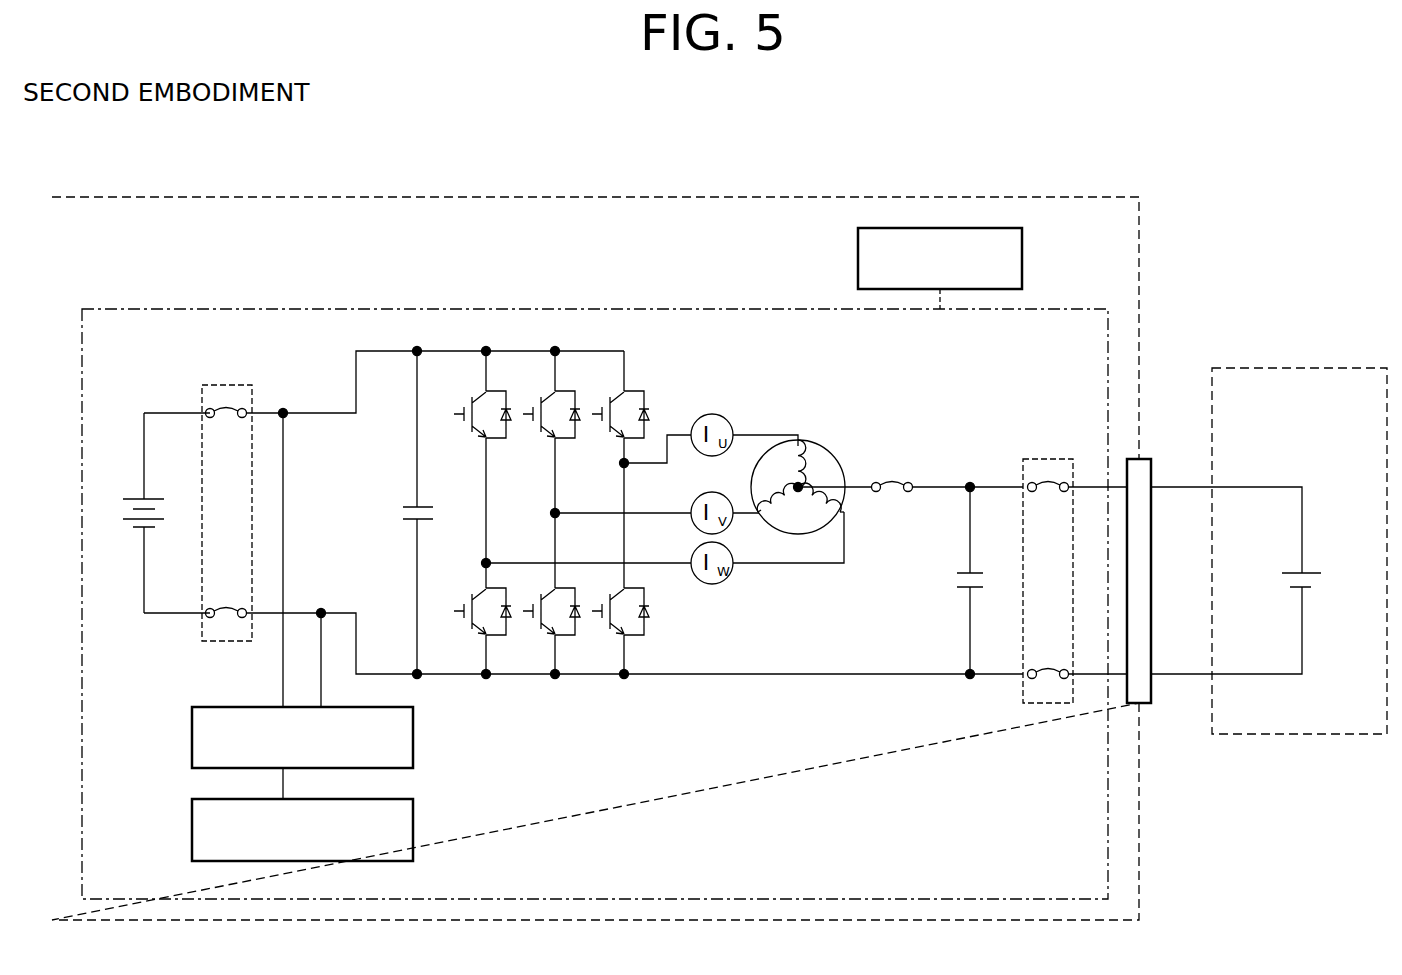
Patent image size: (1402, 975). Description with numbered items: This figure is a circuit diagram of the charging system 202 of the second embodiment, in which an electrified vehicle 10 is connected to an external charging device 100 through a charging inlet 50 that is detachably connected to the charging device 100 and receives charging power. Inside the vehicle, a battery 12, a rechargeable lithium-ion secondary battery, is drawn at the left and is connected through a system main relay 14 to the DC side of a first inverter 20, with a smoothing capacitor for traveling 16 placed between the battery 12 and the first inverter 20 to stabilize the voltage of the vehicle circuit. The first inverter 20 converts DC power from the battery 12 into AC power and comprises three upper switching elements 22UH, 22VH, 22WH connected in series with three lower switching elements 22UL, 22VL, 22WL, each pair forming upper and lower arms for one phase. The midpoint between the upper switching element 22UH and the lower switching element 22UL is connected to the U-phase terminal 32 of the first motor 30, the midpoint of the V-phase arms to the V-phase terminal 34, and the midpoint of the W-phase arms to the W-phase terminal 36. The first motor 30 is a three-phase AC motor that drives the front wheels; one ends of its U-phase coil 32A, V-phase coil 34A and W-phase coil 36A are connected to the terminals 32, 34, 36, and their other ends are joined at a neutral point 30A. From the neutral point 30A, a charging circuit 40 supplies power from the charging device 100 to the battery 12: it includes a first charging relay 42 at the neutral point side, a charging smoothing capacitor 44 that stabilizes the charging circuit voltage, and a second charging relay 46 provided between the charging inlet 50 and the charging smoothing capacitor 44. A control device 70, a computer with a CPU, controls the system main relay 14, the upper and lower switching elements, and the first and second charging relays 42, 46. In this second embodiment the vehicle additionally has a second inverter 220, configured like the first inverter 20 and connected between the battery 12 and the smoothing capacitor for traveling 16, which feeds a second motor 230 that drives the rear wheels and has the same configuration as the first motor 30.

The electrified vehicle 10 is at (1088, 196).
The battery 12 is at (140, 497).
The system main relay 14 is at (216, 385).
The smoothing capacitor for traveling 16 is at (410, 506).
The first inverter 20 is at (653, 340).
The upper switching element 22WH is at (476, 386).
The upper switching element 22VH is at (545, 386).
The upper switching element 22UH is at (612, 386).
The lower switching element 22WL is at (463, 642).
The lower switching element 22VL is at (538, 640).
The lower switching element 22UL is at (610, 640).
The first motor 30 is at (815, 420).
The neutral point 30A is at (812, 478).
The U-phase terminal 32 is at (805, 445).
The U-phase coil 32A is at (785, 458).
The V-phase terminal 34 is at (758, 520).
The V-phase coil 34A is at (790, 506).
The W-phase terminal 36 is at (845, 510).
The W-phase coil 36A is at (828, 507).
The charging circuit 40 is at (983, 432).
The first charging relay 42 is at (893, 481).
The charging smoothing capacitor 44 is at (962, 592).
The second charging relay 46 is at (1050, 458).
The charging inlet 50 is at (1143, 455).
The control device 70 is at (1022, 262).
The charging device 100 is at (1337, 369).
The charging system 202 is at (1215, 170).
The second inverter 220 is at (192, 735).
The second motor 230 is at (192, 828).